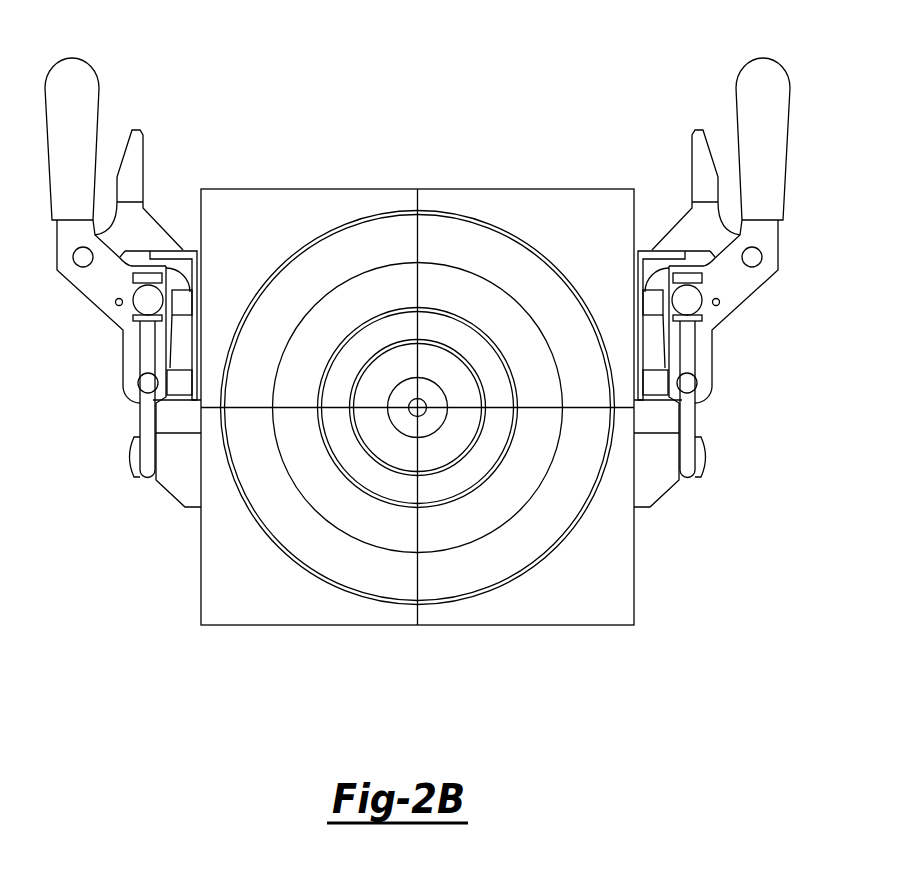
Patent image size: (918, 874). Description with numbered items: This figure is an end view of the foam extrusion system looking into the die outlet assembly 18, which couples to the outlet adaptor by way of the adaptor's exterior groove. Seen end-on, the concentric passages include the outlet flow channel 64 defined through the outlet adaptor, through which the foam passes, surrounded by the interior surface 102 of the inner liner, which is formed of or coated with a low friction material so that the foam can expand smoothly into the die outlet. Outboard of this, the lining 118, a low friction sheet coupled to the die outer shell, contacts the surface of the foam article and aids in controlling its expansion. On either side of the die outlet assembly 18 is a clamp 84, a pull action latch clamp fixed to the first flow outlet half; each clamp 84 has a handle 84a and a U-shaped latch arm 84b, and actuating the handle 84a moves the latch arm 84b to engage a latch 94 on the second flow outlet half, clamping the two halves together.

The die outlet assembly 18 is at (642, 579).
The outlet flow channel 64 is at (402, 424).
The interior surface 102 is at (443, 372).
The lining 118 is at (490, 457).
The clamp 84 is at (90, 46).
The handle 84a is at (93, 90).
The U-shaped latch arm 84b is at (133, 420).
The latch 94 is at (128, 463).